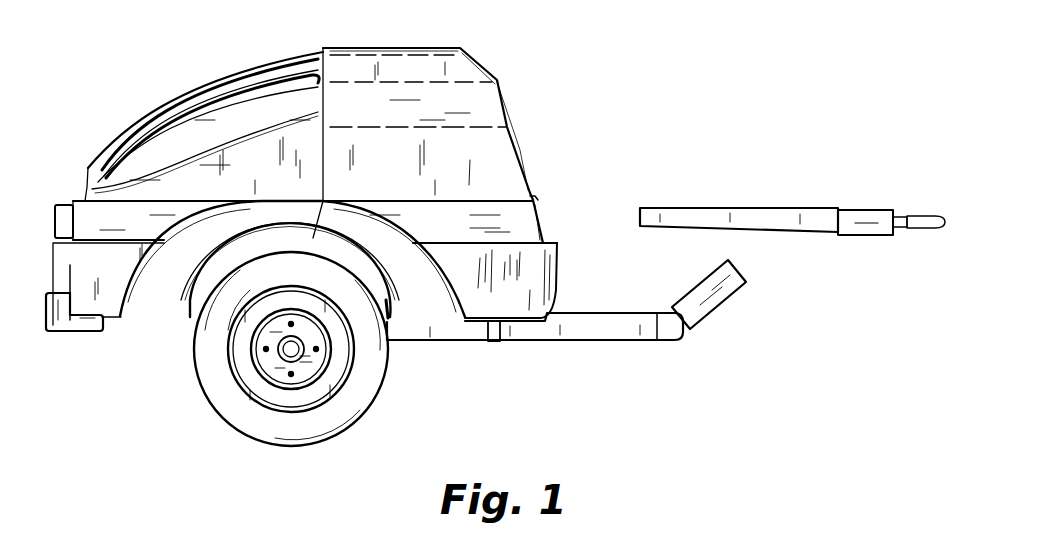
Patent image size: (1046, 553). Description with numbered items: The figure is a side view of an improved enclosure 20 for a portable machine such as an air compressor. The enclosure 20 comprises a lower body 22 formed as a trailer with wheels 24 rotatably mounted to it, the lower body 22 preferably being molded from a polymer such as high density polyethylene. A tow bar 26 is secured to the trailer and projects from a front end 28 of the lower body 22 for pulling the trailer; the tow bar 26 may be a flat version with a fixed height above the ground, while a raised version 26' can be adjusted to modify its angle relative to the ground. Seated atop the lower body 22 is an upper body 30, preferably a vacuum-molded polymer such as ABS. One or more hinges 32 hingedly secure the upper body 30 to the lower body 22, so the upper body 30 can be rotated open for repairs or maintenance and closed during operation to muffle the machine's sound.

The enclosure 20 is at (190, 58).
The lower body 22 is at (97, 220).
The wheels 24 is at (210, 380).
The tow bar 26 is at (566, 339).
The raised tow bar 26' is at (792, 185).
The front end 28 is at (558, 282).
The upper body 30 is at (464, 108).
The hinges 32 is at (541, 181).